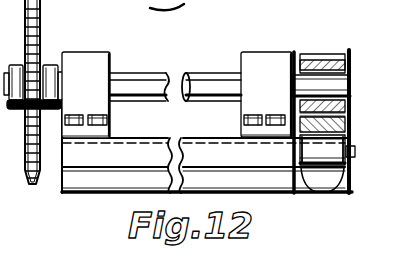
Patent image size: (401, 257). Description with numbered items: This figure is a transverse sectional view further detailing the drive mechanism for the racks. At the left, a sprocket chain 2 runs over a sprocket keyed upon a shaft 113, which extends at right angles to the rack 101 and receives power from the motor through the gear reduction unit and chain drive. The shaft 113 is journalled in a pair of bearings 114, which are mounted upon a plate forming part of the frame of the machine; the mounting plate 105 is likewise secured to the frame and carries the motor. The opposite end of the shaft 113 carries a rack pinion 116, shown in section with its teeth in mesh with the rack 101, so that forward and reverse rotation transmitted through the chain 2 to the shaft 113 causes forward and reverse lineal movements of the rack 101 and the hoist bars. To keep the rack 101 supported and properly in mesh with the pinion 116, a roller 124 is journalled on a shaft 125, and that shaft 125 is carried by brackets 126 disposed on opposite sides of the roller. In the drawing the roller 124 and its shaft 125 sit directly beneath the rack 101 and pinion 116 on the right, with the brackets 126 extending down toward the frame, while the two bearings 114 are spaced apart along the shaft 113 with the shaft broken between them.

The chain 2 is at (23, 35).
The mounting plate 105 is at (132, 138).
The bearings 114 is at (105, 52).
The shaft 113 is at (158, 61).
The rack pinion 116 is at (318, 54).
The rack 101 is at (335, 126).
The rollers 124 is at (338, 141).
The shafts 125 is at (356, 151).
The brackets 126 is at (308, 182).